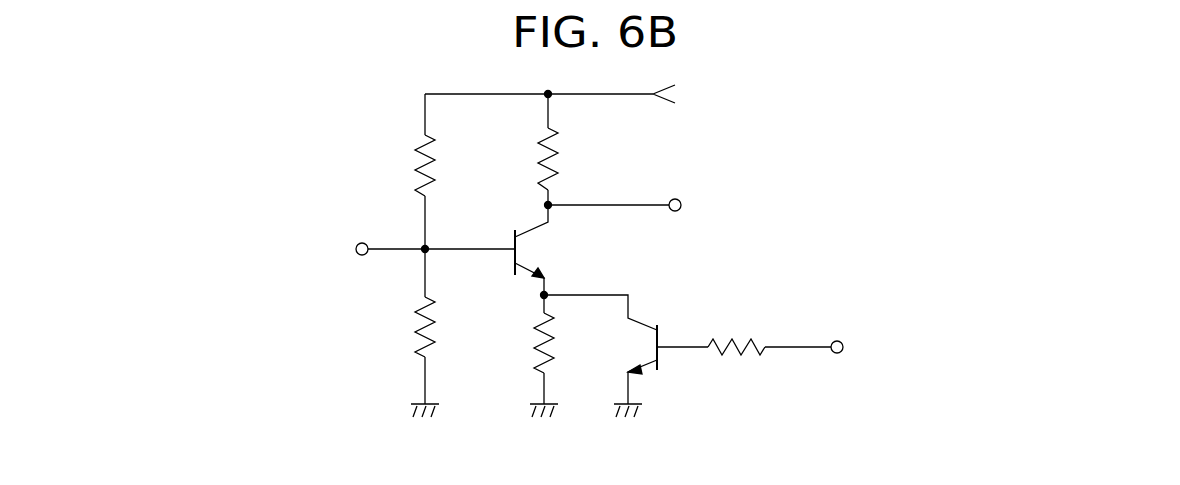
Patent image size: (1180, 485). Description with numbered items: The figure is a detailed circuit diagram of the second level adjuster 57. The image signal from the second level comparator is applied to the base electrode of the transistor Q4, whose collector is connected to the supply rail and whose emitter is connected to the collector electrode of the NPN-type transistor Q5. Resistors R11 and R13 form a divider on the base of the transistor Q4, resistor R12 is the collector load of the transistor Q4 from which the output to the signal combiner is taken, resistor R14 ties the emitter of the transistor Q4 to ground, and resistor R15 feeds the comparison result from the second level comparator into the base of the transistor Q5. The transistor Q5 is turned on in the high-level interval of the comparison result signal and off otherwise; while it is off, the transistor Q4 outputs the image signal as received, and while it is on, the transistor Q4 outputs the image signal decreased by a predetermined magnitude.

The second level adjuster 57 is at (810, 112).
The resistor R11 is at (396, 171).
The resistor R12 is at (519, 149).
The resistor R13 is at (395, 333).
The resistor R14 is at (516, 356).
The resistor R15 is at (744, 327).
The transistor Q4 is at (547, 250).
The NPN-type transistor Q5 is at (600, 356).